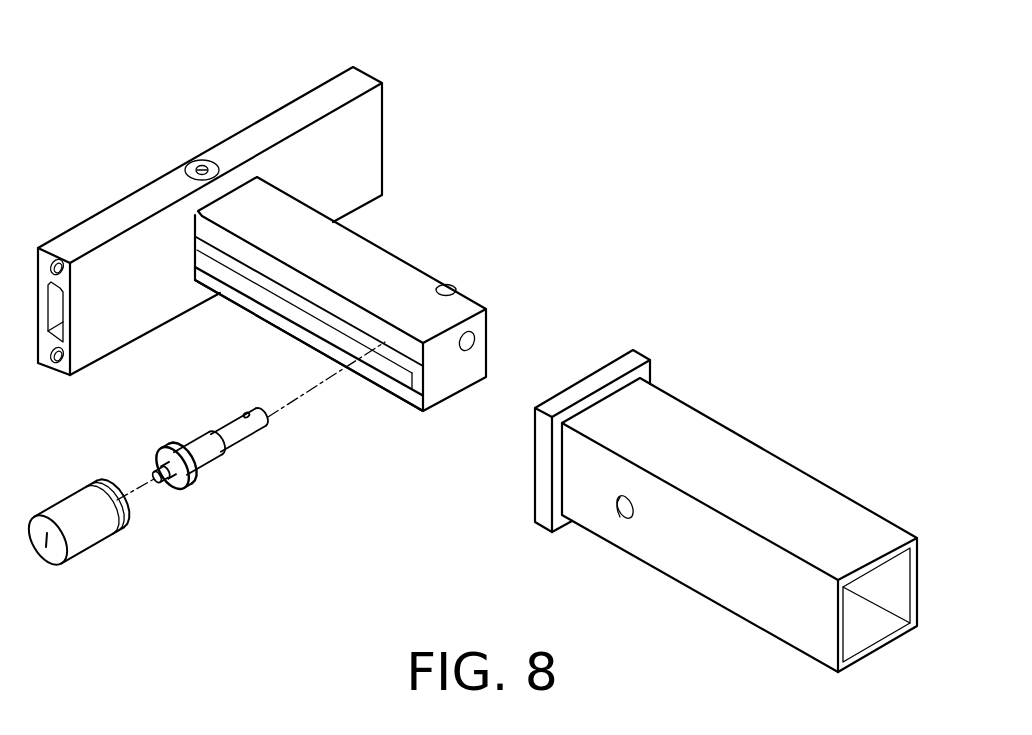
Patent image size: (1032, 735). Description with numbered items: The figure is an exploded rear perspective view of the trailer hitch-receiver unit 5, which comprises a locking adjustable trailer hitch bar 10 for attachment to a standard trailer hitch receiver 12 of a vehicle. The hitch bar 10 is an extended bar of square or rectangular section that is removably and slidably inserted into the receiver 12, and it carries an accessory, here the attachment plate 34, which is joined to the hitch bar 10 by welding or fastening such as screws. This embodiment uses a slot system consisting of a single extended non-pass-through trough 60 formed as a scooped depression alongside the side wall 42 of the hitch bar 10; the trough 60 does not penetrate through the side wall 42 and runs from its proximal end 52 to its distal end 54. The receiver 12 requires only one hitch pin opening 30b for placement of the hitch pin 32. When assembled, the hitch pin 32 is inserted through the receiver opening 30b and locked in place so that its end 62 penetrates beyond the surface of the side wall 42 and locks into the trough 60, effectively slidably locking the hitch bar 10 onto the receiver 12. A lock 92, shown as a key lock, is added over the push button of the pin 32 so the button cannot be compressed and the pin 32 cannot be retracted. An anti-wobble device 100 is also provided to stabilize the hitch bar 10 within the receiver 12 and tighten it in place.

The trailer hitch-receiver unit 5 is at (191, 110).
The attachment plate 34 is at (133, 212).
The locking adjustable trailer hitch bar 10 is at (383, 263).
The anti-wobble device 100 is at (449, 291).
The proximal end of the trough 52 is at (205, 262).
The trough 60 is at (295, 307).
The side wall 42 is at (377, 380).
The distal end of the trough 54 is at (410, 387).
The lock 92 is at (55, 499).
The hitch pin 32 is at (197, 477).
The end of the hitch pin 62 is at (265, 433).
The trailer hitch receiver 12 is at (739, 488).
The hitch pin opening 30b is at (622, 511).